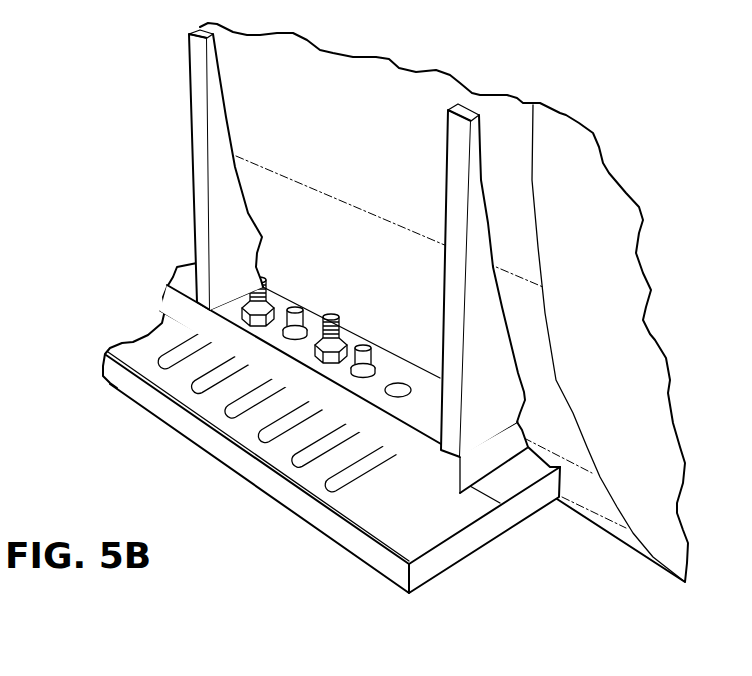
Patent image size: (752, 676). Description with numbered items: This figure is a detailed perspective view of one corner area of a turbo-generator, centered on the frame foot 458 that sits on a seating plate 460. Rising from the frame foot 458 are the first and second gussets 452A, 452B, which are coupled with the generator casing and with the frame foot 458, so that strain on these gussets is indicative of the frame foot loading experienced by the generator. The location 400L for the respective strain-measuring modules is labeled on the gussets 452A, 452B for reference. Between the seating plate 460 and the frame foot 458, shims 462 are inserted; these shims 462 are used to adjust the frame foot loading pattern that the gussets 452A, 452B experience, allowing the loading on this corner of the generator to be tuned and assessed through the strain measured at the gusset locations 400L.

The location for respective modules 400L is at (228, 258).
The first gusset 452A is at (458, 223).
The second gusset 452B is at (201, 117).
The frame foot 458 is at (427, 423).
The seating plate 460 is at (381, 566).
The shims 462 is at (362, 517).